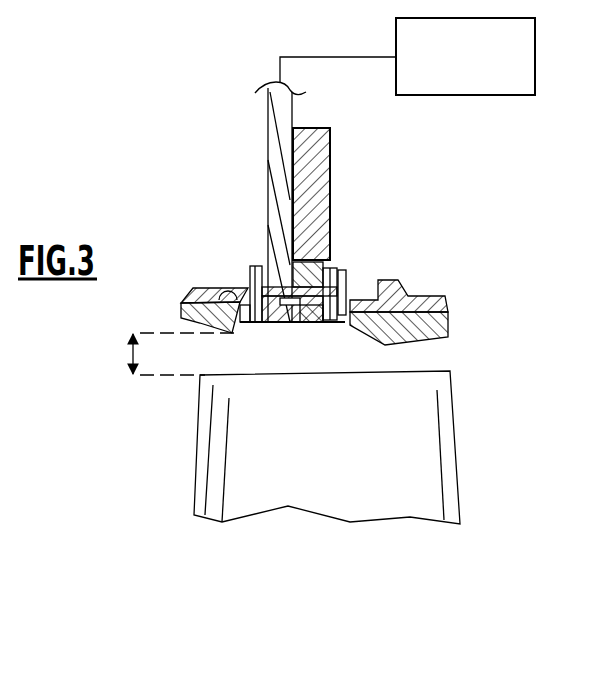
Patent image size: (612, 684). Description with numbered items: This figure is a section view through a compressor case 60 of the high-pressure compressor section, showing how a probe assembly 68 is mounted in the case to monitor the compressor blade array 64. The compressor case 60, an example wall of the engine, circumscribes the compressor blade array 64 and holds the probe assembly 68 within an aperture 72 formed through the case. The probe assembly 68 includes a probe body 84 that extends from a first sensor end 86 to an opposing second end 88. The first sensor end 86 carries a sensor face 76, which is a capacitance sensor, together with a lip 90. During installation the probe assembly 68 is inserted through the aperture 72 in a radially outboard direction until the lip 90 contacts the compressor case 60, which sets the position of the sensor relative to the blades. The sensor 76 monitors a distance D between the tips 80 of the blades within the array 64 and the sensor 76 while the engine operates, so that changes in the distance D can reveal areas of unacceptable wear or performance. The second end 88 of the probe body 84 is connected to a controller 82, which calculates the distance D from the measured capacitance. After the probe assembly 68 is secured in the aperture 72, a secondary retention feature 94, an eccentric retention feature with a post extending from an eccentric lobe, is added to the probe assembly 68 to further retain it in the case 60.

The controller 82 is at (481, 68).
The probe assembly 68 is at (294, 197).
The probe body 84 is at (247, 204).
The second end 88 is at (350, 130).
The aperture 72 is at (252, 280).
The sensor 76 is at (290, 324).
The secondary retention feature 94 is at (347, 268).
The first sensor end 86 is at (352, 285).
The compressor case 60 is at (425, 297).
The lip 90 is at (225, 333).
The distance D is at (130, 358).
The tip 80 is at (370, 440).
The compressor blade array 64 is at (427, 490).